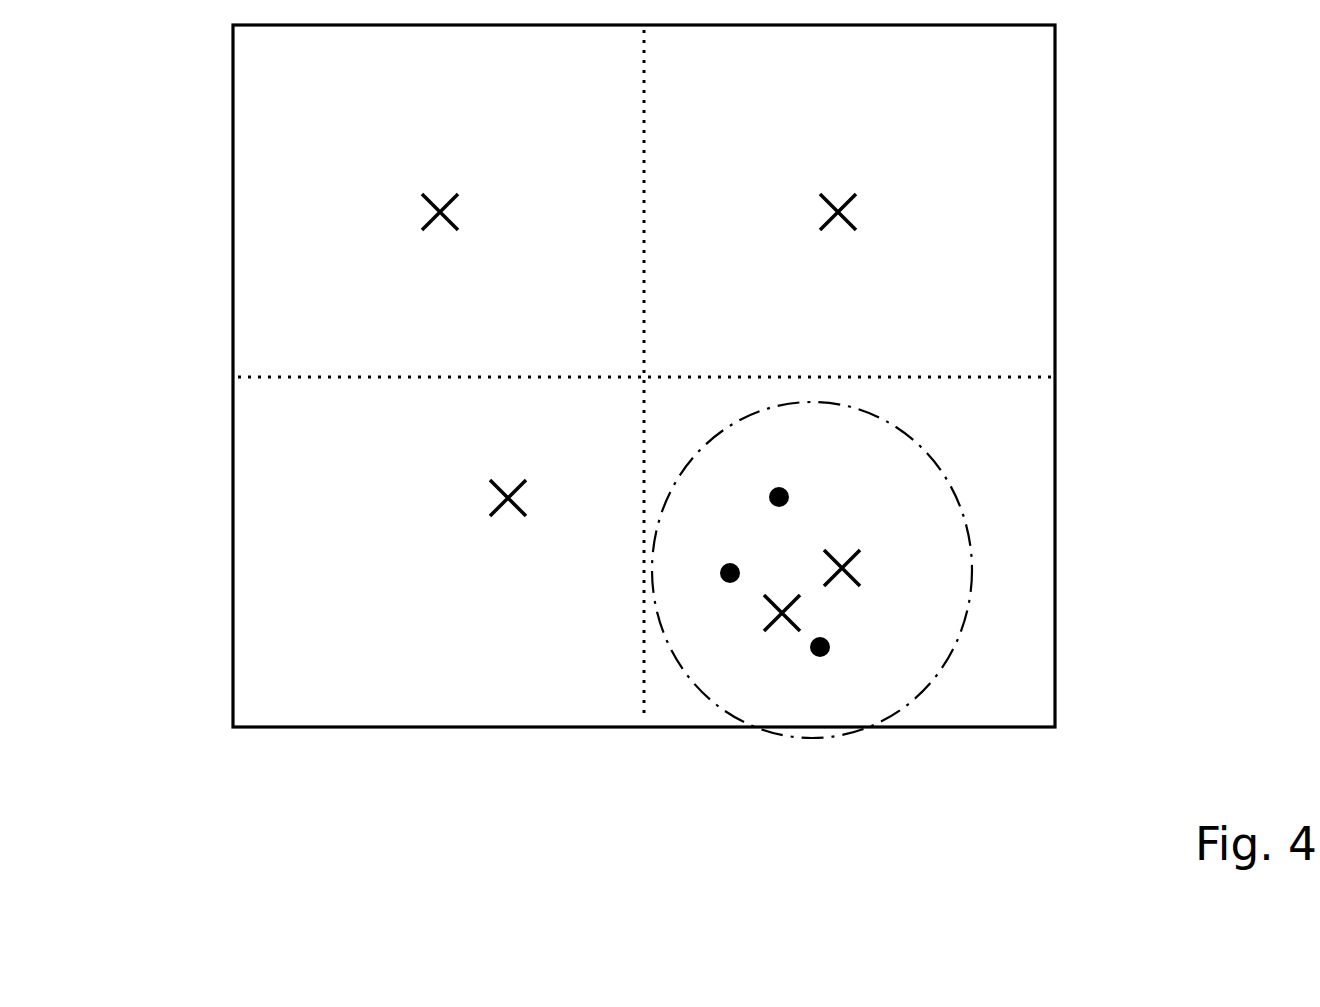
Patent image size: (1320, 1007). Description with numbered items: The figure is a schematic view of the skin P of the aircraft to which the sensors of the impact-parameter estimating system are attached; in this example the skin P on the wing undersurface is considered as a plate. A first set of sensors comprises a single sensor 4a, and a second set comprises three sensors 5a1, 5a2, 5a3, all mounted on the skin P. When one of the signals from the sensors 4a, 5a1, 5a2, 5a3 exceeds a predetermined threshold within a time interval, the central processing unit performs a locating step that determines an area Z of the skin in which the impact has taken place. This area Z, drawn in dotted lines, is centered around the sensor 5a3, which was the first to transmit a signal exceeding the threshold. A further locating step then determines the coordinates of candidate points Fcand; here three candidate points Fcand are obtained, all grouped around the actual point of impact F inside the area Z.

The skin P is at (367, 687).
The impact area Z is at (893, 430).
The sensor 5a1 is at (432, 211).
The sensor 5a2 is at (846, 208).
The sensor 5a3 is at (852, 567).
The sensor 4a is at (499, 497).
The point of impact F is at (766, 635).
The candidate point Fcand is at (770, 497).